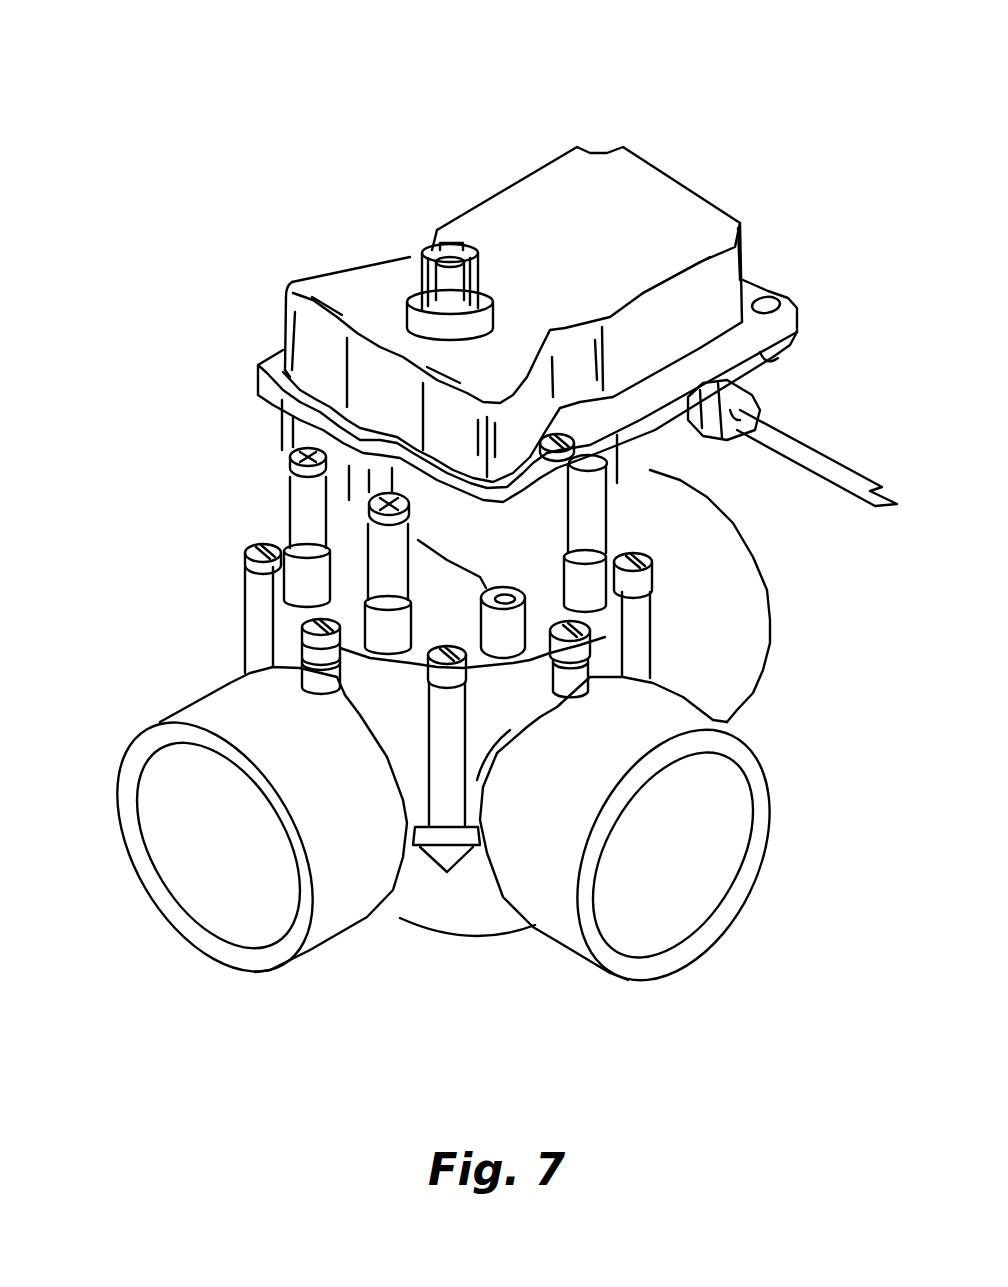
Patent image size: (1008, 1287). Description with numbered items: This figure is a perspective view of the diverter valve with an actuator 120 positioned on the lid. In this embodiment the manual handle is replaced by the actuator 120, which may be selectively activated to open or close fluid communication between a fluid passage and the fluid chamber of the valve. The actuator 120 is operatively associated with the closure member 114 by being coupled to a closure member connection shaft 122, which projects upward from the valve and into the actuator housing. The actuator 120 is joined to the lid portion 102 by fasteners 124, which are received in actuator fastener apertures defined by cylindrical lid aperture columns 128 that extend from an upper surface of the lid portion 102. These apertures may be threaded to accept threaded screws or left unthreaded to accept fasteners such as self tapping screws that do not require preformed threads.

The lid portion 102 is at (275, 625).
The closure member 114 is at (435, 255).
The actuator 120 is at (697, 190).
The closure member connection shaft 122 is at (440, 301).
The fasteners 124 is at (292, 465).
The cylindrical lid aperture columns 128 is at (308, 585).